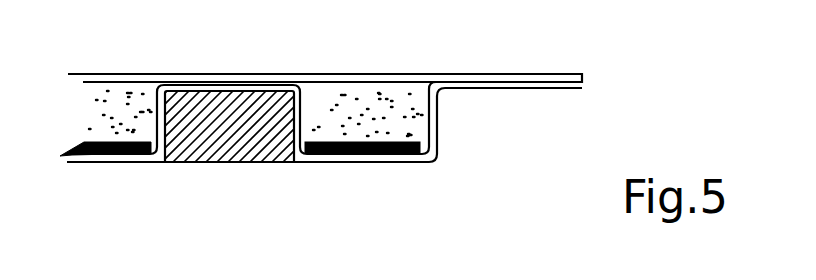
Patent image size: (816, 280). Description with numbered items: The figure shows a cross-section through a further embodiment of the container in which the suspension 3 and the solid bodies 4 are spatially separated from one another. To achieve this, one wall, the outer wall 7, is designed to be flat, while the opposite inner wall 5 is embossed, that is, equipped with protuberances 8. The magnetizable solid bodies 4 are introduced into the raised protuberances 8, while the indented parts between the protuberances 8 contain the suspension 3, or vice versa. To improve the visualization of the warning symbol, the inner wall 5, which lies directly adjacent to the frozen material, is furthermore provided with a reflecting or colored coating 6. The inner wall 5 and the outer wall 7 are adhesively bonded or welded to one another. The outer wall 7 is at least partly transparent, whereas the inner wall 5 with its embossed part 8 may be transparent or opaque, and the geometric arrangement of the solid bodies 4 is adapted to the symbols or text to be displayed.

The suspension 3 is at (347, 118).
The solid bodies 4 is at (187, 123).
The inner wall 5 is at (133, 163).
The reflecting or colored coating 6 is at (91, 156).
The outer wall 7 is at (188, 81).
The protuberances 8 is at (437, 118).